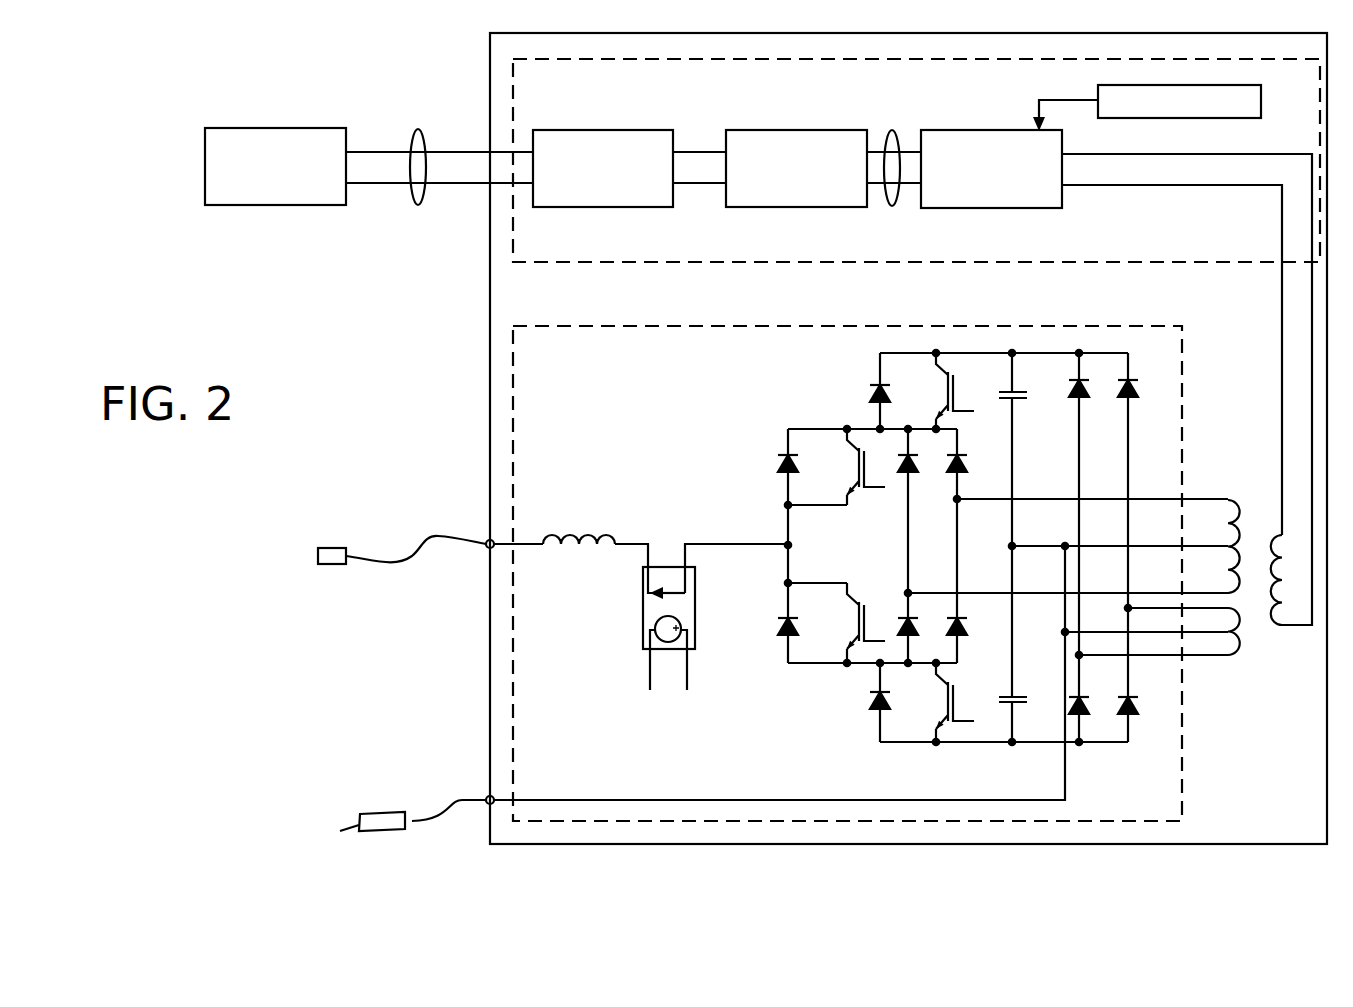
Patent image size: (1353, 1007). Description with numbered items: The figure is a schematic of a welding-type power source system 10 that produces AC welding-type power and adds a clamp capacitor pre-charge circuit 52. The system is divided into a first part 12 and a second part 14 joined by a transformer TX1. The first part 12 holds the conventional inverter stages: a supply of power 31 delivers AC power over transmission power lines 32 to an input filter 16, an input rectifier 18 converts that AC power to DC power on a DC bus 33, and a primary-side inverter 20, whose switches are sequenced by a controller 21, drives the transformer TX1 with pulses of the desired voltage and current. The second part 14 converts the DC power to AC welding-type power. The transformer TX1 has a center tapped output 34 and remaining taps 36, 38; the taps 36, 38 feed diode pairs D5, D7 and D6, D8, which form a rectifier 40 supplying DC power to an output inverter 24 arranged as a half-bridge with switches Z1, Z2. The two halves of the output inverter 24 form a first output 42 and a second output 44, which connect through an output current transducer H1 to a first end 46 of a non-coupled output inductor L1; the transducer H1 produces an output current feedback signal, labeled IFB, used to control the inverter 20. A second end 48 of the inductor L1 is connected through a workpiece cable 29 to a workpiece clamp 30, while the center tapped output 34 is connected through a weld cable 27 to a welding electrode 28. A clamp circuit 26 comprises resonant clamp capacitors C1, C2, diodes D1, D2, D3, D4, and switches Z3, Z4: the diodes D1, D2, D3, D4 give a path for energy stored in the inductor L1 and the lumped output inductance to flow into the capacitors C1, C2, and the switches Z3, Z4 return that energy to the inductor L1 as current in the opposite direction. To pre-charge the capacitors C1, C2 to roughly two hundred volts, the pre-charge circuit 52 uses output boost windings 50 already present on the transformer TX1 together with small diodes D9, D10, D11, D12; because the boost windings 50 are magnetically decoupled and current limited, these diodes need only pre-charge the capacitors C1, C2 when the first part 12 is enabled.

The welding-type power source system 10 is at (490, 312).
The first part 12 is at (905, 263).
The second part 14 is at (732, 326).
The input filter 16 is at (605, 130).
The input rectifier 18 is at (795, 131).
The inverter 20 is at (995, 130).
The controller 21 is at (1210, 118).
The output inverter 24 is at (773, 683).
The clamp circuit 26 is at (1023, 347).
The weld cable 27 is at (460, 797).
The welding electrode 28 is at (385, 830).
The workpiece cable 29 is at (420, 563).
The workpiece clamp 30 is at (332, 548).
The supply of power 31 is at (275, 128).
The transmission power lines 32 is at (418, 205).
The DC bus 33 is at (893, 130).
The center tapped output 34 is at (1028, 546).
The tap 36 is at (1028, 500).
The tap 38 is at (960, 593).
The rectifier 40 is at (873, 563).
The first output 42 is at (788, 505).
The second output 44 is at (788, 583).
The first end 46 is at (648, 544).
The second end 48 is at (525, 544).
The output boost windings 50 is at (1254, 643).
The clamp capacitor pre-charge circuit 52 is at (1103, 347).
The output inductor L1 is at (591, 533).
The output current transducer H1 is at (643, 605).
The current feedback IFB is at (668, 697).
The transformer TX1 is at (1222, 494).
The capacitor C1 is at (1020, 392).
The capacitor C2 is at (1005, 704).
The switch Z1 is at (868, 467).
The switch Z2 is at (868, 623).
The switch Z3 is at (957, 391).
The switch Z4 is at (957, 702).
The diode D1 is at (780, 466).
The diode D2 is at (780, 628).
The diode D3 is at (872, 396).
The diode D4 is at (872, 700).
The diode D5 is at (966, 468).
The diode D6 is at (966, 633).
The diode D7 is at (916, 470).
The diode D8 is at (917, 634).
The diode D9 is at (1137, 392).
The diode D10 is at (1137, 710).
The diode D11 is at (1088, 393).
The diode D12 is at (1088, 710).